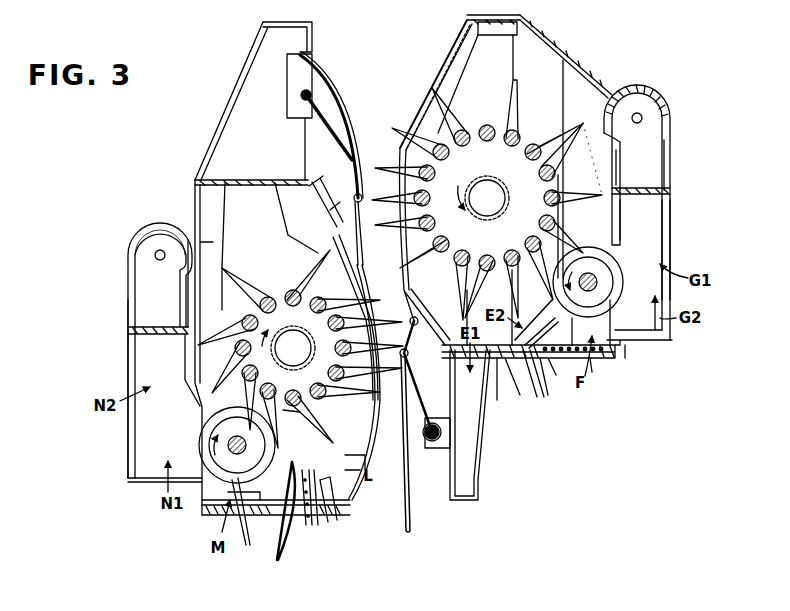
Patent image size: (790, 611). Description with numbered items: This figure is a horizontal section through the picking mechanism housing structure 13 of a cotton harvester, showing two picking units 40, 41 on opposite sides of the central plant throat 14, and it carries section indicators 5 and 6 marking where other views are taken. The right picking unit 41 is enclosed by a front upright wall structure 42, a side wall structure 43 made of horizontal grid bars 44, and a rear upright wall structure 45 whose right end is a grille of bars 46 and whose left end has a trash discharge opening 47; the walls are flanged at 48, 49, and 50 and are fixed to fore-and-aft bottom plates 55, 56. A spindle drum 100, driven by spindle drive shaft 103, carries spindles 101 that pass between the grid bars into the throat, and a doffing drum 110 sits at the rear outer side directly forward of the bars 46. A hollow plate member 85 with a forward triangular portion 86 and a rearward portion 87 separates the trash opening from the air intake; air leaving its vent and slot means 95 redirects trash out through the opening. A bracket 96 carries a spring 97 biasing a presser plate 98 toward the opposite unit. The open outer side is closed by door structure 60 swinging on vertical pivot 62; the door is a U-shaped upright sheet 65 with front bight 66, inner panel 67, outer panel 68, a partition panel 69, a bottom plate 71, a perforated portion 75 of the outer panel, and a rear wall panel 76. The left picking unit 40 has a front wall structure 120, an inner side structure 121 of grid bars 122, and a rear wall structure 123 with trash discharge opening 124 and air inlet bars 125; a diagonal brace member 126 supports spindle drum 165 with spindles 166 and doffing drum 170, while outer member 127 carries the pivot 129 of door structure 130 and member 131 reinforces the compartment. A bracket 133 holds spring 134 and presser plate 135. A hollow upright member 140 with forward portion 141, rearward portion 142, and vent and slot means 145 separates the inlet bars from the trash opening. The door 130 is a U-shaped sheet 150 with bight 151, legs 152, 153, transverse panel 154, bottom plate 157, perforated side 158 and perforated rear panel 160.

The section line 5 is at (654, 68).
The section line 6 is at (290, 455).
The picking mechanism housing structure 13 is at (190, 188).
The picking passageway or throat 14 is at (380, 100).
The left picking unit 40 is at (246, 58).
The right picking unit 41 is at (572, 50).
The front upright wall structure 42 is at (535, 30).
The side wall structure 43 is at (432, 88).
The grid bars 44 is at (420, 113).
The rear upright wall structure 45 is at (556, 368).
The bars 46 is at (600, 352).
The trash discharge opening 47 is at (521, 360).
The flange 48 is at (528, 86).
The flange 49 is at (459, 60).
The flange 50 is at (497, 358).
The bottom plate 55 is at (462, 286).
The bottom plate 56 is at (575, 92).
The door structure 60 is at (677, 335).
The vertical pivot 62 is at (642, 118).
The upright sheet 65 is at (637, 189).
The front upright panel or bight 66 is at (648, 95).
The inner upright panel 67 is at (621, 180).
The outer upright panel 68 is at (669, 140).
The partition panel 69 is at (655, 190).
The bottom plate 71 is at (636, 220).
The perforated portion of outer panel 75 is at (672, 246).
The rear wall panel 76 is at (628, 352).
The hollow plate member 85 is at (527, 385).
The forwardly extending triangular portion 86 is at (576, 325).
The rearwardly extending triangular portion 87 is at (545, 385).
The vent and slot means 95 is at (520, 312).
The bracket 96 is at (476, 449).
The spring 97 is at (413, 395).
The presser plate 98 is at (410, 497).
The spindle drum 100 is at (527, 135).
The spindles 101 is at (583, 159).
The spindle drive shaft 103 is at (492, 184).
The doffing drum 110 is at (621, 258).
The front upright wall structure 120 is at (253, 182).
The inner side structure 121 is at (370, 421).
The grid bars 122 is at (362, 292).
The rear upright wall structure 123 is at (222, 518).
The trash discharge opening 124 is at (330, 515).
The bars 125 is at (251, 518).
The diagonal brace member 126 is at (300, 412).
The outer structure member 127 is at (218, 247).
The vertical pivot 129 is at (157, 253).
The door structure 130 is at (128, 470).
The structural member 131 is at (310, 203).
The horizontal brace or bracket 133 is at (232, 128).
The spring 134 is at (332, 130).
The presser plate 135 is at (322, 80).
The hollow upright member 140 is at (278, 560).
The forwardly extending triangular portion 141 is at (280, 483).
The rearwardly extending triangular portion 142 is at (289, 542).
The vent and slot means 145 is at (312, 506).
The U-shaped sheet 150 is at (127, 268).
The bight or curved portion 151 is at (157, 223).
The inner panel leg 152 is at (192, 316).
The outer panel leg 153 is at (128, 318).
The vertical transverse panel 154 is at (153, 326).
The bottom plate 157 is at (170, 377).
The perforated side panel 158 is at (128, 365).
The perforated rear panel 160 is at (152, 481).
The spindle drum 165 is at (279, 286).
The spindles 166 is at (252, 280).
The doffing drum 170 is at (279, 446).